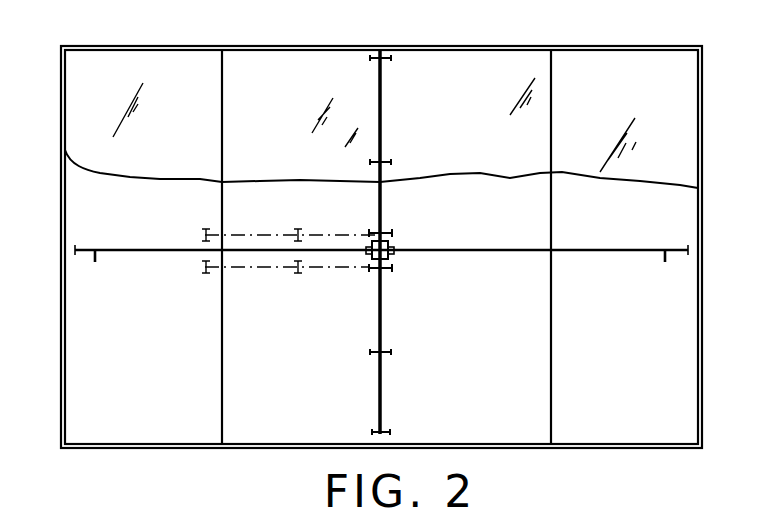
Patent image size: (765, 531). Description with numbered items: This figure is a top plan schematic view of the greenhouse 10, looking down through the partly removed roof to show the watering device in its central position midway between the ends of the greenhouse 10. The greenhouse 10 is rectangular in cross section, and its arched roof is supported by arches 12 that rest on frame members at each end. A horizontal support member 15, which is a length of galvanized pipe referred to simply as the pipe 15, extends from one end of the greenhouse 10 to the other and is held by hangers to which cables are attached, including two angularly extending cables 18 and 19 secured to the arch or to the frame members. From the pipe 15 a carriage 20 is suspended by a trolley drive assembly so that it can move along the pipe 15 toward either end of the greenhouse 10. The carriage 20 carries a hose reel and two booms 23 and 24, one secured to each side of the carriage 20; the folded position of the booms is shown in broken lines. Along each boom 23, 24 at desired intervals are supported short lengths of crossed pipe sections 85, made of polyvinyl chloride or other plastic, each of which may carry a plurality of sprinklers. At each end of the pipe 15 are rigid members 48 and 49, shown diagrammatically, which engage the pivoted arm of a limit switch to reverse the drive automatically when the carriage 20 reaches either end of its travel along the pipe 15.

The greenhouse 10 is at (625, 46).
The arches 12 is at (61, 102).
The horizontal support member 15 is at (464, 250).
The angularly extending cable 18 is at (222, 213).
The angularly extending cable 19 is at (223, 353).
The carriage 20 is at (393, 271).
The boom 23 is at (382, 128).
The boom 24 is at (313, 268).
The rigid member 48 is at (96, 262).
The rigid member 49 is at (654, 278).
The crossed pipe sections 85 is at (373, 60).